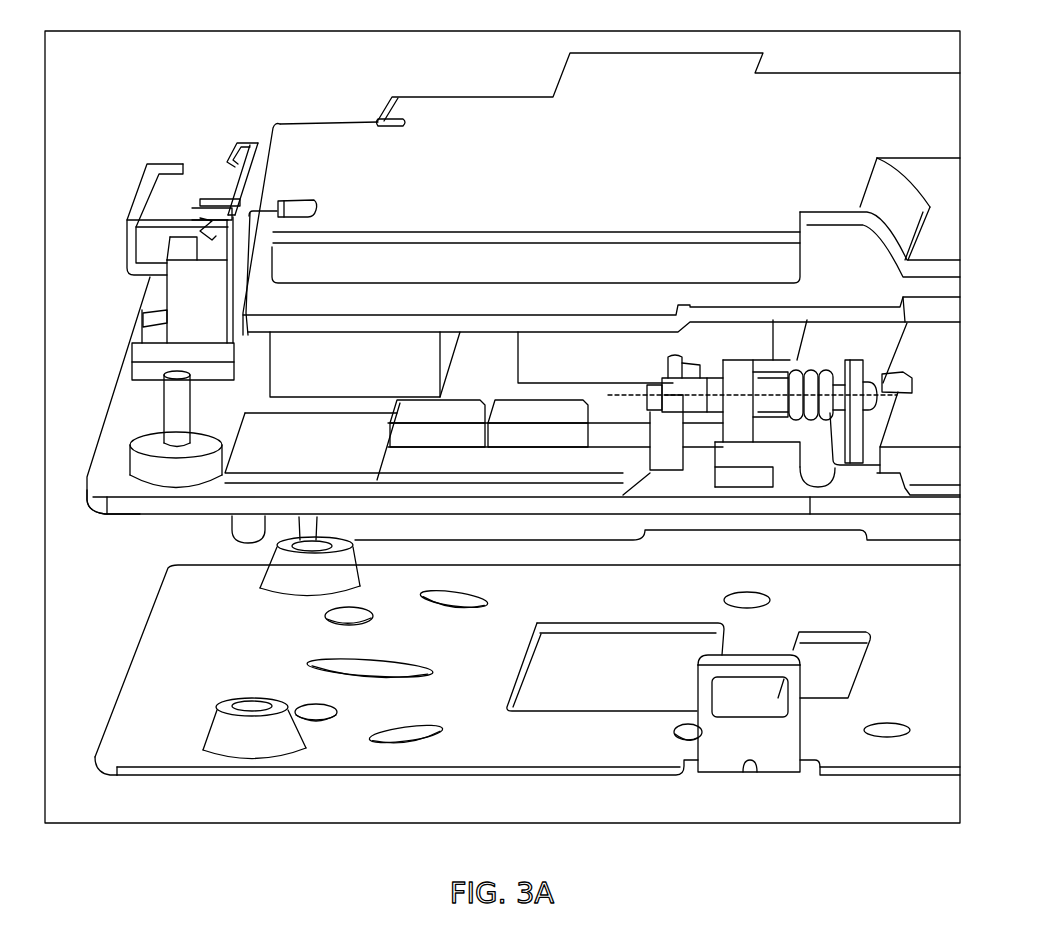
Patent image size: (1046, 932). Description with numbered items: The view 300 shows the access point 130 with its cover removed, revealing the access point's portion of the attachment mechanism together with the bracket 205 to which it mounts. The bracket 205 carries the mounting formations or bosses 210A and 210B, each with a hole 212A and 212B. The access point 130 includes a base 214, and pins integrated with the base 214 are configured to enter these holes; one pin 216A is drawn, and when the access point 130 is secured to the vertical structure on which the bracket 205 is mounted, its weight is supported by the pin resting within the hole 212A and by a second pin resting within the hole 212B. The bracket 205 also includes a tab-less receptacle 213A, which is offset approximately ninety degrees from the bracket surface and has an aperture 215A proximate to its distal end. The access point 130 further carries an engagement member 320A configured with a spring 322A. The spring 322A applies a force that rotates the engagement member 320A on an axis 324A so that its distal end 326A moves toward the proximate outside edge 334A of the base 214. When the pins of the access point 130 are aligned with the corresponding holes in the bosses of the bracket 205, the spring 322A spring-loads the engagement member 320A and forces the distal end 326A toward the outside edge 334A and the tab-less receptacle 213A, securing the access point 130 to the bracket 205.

The view 300 is at (145, 108).
The access point 130 is at (461, 103).
The base 214 is at (115, 388).
The proximate outside edge 334A is at (133, 527).
The pin 216A is at (231, 531).
The hole 212B is at (292, 538).
The mounting formation or boss 210B is at (288, 583).
The bracket 205 is at (130, 665).
The hole 212A is at (253, 697).
The mounting formation or boss 210A is at (212, 722).
The axis 324A is at (633, 397).
The spring 322A is at (807, 370).
The distal end 326A is at (740, 480).
The engagement member 320A is at (800, 477).
The aperture 215A is at (747, 697).
The tab-less receptacle 213A is at (803, 733).